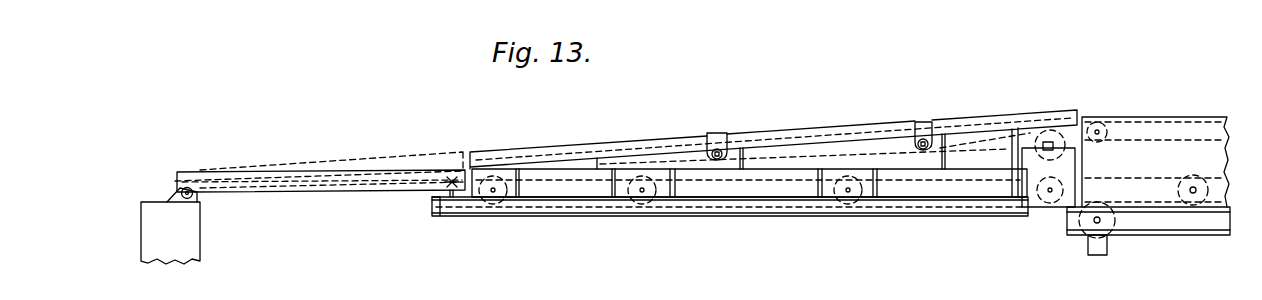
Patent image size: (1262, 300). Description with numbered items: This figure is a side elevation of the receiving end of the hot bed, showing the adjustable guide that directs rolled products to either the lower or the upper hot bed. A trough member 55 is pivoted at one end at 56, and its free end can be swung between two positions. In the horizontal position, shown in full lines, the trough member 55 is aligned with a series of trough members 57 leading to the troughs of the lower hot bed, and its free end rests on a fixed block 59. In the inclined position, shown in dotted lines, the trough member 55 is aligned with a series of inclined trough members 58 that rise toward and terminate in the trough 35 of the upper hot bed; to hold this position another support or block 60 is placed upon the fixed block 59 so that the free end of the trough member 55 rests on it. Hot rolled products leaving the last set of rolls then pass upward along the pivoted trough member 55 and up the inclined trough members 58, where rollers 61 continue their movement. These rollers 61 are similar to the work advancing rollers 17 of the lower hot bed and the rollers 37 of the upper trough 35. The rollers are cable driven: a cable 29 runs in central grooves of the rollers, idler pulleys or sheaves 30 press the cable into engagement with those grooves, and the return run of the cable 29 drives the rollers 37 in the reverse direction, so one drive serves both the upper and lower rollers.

The work advancing rollers 17 is at (1045, 207).
The cable 29 is at (957, 147).
The idler pulleys or sheaves 30 is at (1115, 240).
The trough 35 is at (1152, 118).
The rollers 37 is at (1097, 126).
The trough member 55 is at (345, 163).
The pivot 56 is at (193, 196).
The trough members 57 is at (570, 189).
The inclined trough members 58 is at (619, 118).
The fixed block 59 is at (461, 185).
The support or block 60 is at (427, 202).
The rollers 61 is at (722, 135).